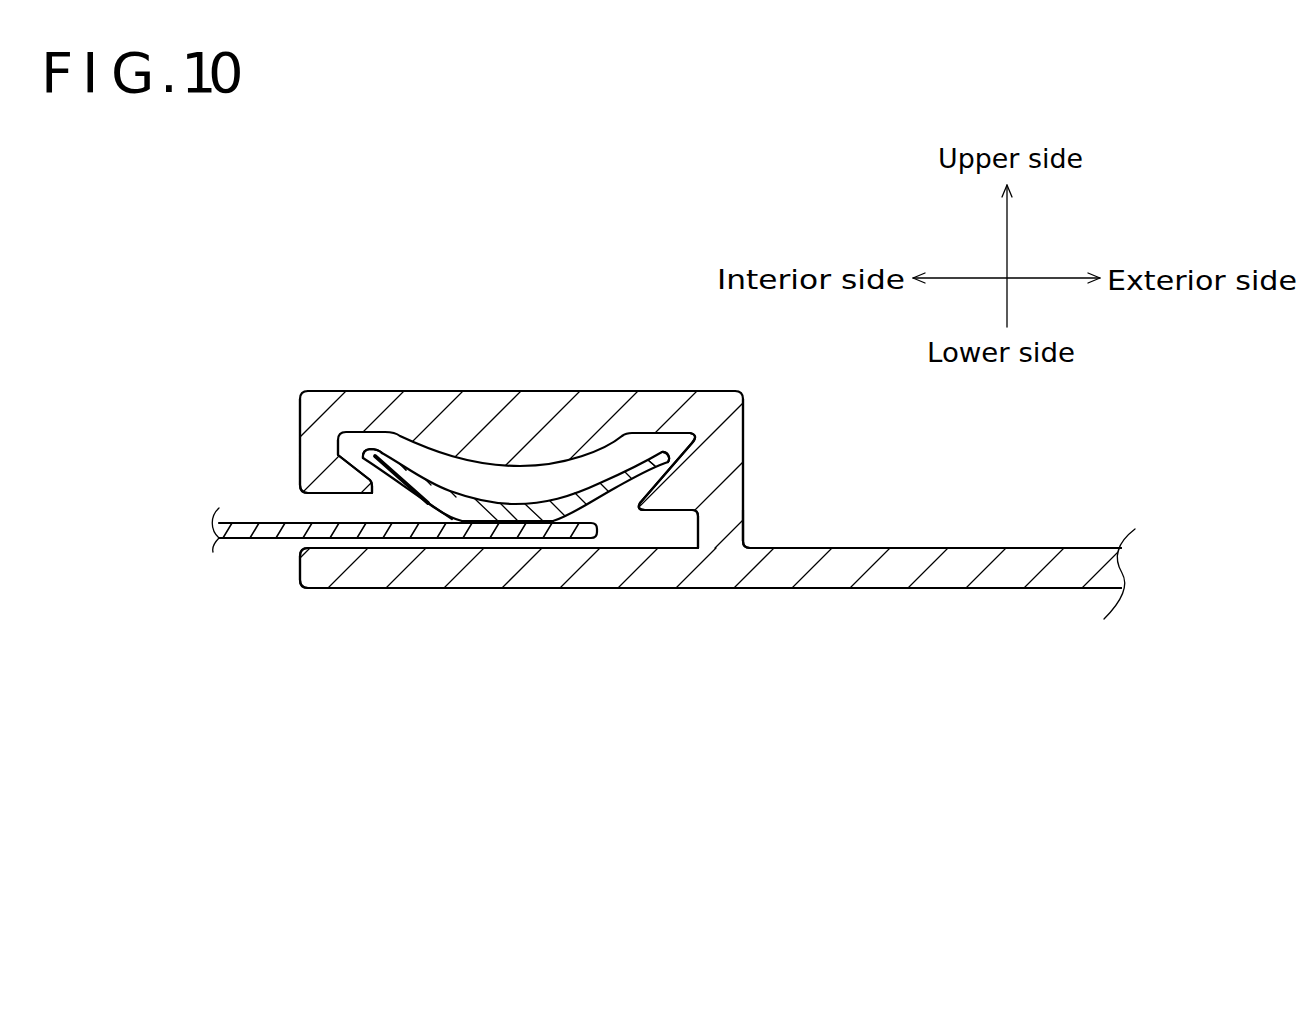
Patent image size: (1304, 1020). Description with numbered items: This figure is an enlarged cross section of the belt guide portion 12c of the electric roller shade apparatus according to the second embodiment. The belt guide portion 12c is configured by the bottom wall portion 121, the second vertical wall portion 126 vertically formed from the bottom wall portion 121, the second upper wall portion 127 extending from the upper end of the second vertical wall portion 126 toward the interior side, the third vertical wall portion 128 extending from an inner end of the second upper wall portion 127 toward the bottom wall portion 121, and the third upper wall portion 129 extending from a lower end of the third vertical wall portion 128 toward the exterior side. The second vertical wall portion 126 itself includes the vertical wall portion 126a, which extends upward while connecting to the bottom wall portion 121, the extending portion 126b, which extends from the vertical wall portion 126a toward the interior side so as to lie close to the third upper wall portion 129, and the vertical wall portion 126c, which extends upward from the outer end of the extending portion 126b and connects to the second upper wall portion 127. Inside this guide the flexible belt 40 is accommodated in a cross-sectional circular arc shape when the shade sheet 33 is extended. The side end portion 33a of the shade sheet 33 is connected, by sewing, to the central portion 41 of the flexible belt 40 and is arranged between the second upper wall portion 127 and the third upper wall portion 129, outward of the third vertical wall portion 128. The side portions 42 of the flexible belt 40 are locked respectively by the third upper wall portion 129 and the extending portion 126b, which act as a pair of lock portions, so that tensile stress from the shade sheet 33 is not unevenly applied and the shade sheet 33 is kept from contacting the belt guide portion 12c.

The belt guide portion 12c is at (452, 632).
The third vertical wall portion 128 is at (322, 448).
The second upper wall portion 127 is at (632, 389).
The second vertical wall portion 126 is at (750, 533).
The vertical wall portion 126a is at (723, 525).
The extending portion 126b is at (697, 548).
The vertical wall portion 126c is at (720, 437).
The bottom wall portion 121 is at (545, 577).
The third upper wall portion 129 is at (303, 573).
The shade sheet 33 is at (253, 515).
The side end portion 33a is at (520, 530).
The central portion 41 is at (522, 516).
The flexible belt 40 is at (500, 486).
The side portions 42 is at (400, 462).